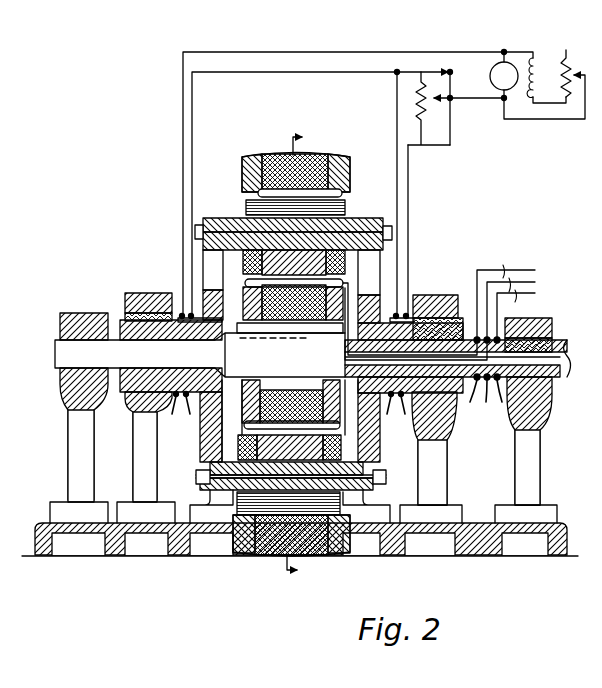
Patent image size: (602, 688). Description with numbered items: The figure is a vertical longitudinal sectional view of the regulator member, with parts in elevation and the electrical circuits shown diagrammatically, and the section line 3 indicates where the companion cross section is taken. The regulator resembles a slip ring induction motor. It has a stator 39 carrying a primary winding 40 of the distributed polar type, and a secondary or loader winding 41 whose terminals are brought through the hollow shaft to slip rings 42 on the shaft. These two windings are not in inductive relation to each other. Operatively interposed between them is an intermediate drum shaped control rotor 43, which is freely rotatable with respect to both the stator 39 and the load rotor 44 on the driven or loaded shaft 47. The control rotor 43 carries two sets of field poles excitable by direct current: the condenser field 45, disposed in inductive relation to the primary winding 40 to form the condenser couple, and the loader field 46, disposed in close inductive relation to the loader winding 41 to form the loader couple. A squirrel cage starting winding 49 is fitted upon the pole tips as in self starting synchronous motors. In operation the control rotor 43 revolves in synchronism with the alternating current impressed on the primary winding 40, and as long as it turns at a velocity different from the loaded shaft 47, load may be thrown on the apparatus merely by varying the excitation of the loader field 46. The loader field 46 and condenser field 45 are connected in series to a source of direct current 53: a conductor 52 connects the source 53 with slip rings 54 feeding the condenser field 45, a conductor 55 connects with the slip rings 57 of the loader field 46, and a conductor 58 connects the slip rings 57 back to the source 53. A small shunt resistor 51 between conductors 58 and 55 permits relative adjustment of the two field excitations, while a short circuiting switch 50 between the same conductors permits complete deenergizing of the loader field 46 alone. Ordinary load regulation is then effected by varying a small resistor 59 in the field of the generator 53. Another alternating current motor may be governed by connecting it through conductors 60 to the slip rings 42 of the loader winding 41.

The stator 39 is at (350, 162).
The primary winding 40 is at (342, 192).
The secondary winding 41 is at (350, 290).
The slip rings 42 is at (512, 420).
The control rotor 43 is at (166, 254).
The load rotor 44 is at (255, 408).
The condenser field 45 is at (240, 212).
The loader field 46 is at (348, 282).
The loaded shaft 47 is at (72, 352).
The squirrel cage starting winding 49 is at (345, 273).
The short circuiting switch 50 is at (457, 78).
The shunt resistor 51 is at (422, 120).
The conductor 52 is at (280, 52).
The source of direct current 53 is at (494, 68).
The slip rings 54 is at (120, 418).
The conductor 55 is at (224, 97).
The slip rings 57 is at (424, 458).
The conductor 58 is at (409, 183).
The resistor 59 is at (567, 53).
The conductors 60 is at (506, 292).
The section line 3- 3 is at (292, 354).